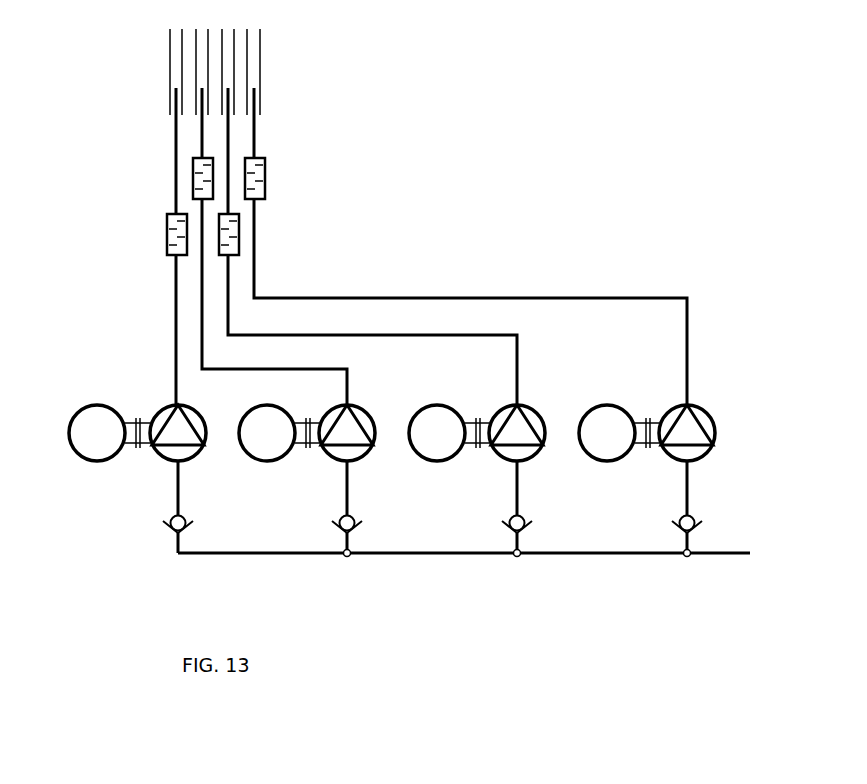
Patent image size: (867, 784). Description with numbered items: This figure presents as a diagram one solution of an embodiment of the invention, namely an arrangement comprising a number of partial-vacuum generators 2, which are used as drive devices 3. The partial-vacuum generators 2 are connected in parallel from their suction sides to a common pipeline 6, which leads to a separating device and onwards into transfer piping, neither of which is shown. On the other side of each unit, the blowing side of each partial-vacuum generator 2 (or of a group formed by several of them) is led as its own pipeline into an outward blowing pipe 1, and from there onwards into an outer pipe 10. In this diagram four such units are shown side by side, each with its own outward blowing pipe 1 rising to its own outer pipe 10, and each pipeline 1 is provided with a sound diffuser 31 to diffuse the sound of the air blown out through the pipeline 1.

The outer pipe 10 is at (170, 52).
The outward blowing pipe 1 is at (255, 118).
The sound diffuser 31 is at (167, 237).
The partial-vacuum generator 2 is at (196, 412).
The drive device 3 is at (80, 431).
The pipeline 6 is at (708, 551).